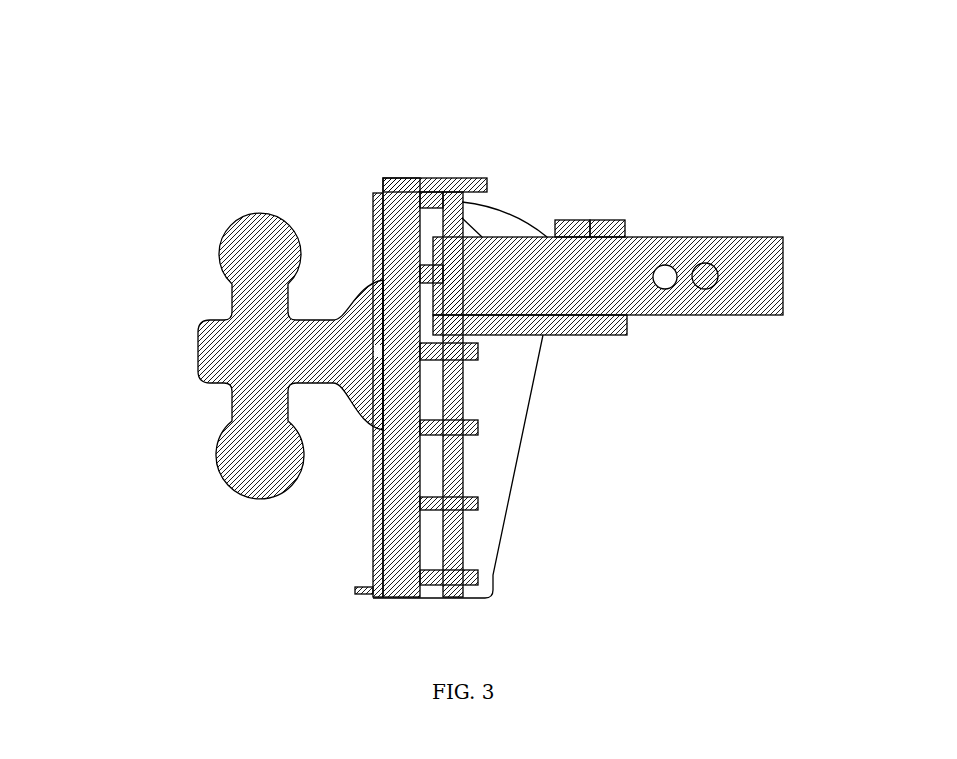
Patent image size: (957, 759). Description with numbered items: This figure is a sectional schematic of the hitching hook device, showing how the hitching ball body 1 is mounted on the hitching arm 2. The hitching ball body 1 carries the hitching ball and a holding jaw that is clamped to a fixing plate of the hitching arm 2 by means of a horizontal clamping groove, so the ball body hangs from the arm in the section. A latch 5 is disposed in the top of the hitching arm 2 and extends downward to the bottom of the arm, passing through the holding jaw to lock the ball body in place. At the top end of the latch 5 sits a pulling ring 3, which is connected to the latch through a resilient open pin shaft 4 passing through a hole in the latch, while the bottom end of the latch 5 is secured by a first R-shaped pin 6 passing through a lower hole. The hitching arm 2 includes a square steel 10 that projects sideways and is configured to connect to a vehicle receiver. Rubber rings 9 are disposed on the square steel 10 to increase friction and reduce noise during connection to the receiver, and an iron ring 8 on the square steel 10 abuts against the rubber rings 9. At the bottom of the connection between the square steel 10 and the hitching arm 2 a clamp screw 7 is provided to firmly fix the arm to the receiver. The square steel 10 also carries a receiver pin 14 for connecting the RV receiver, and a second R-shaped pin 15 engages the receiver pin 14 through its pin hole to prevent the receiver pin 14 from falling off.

The hitching ball body 1 is at (258, 248).
The hitching arm 2 is at (375, 192).
The pulling ring 3 is at (477, 180).
The resilient open pin shaft 4 is at (402, 187).
The latch 5 is at (405, 538).
The first R-shaped pin 6 is at (373, 595).
The clamp screw 7 is at (512, 335).
The iron ring 8 is at (565, 220).
The rubber ring 9 is at (600, 220).
The square steel 10 is at (778, 237).
The receiver pin 14 is at (717, 237).
The second R-shaped pin 15 is at (730, 317).